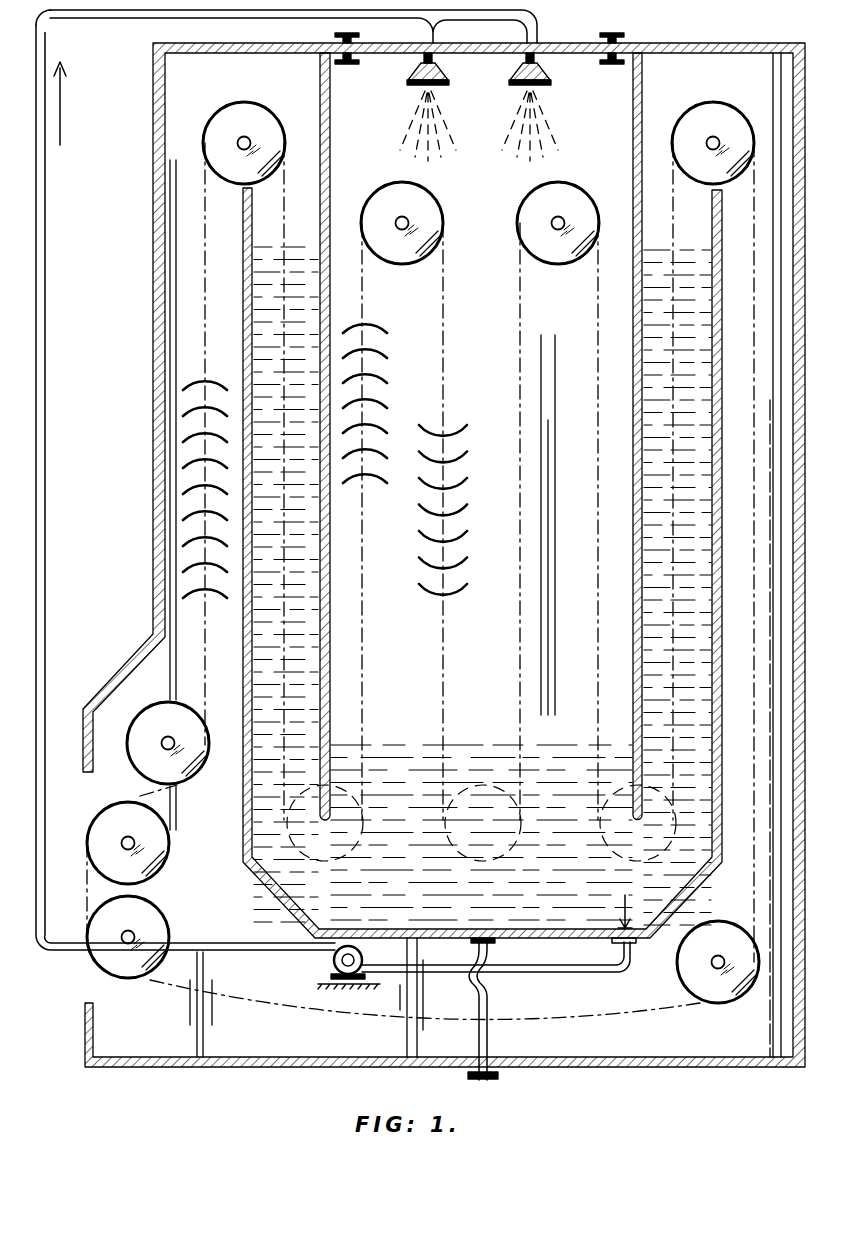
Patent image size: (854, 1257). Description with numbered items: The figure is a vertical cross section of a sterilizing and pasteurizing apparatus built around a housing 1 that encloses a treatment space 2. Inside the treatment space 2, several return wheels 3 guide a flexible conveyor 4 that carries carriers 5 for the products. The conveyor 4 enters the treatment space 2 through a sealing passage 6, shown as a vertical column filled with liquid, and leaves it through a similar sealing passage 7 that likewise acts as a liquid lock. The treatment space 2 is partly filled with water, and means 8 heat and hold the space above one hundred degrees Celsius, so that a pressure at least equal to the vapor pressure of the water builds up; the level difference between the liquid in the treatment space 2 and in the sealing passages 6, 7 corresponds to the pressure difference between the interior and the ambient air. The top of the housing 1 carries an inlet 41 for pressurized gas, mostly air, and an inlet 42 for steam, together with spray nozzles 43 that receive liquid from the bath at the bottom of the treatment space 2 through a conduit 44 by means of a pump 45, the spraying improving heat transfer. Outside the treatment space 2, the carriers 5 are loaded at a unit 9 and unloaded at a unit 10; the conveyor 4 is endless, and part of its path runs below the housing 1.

The housing 1 is at (708, 46).
The treatment space 2 is at (565, 72).
The return wheels 3 is at (256, 115).
The flexible conveyor 4 is at (444, 301).
The carriers 5 is at (389, 390).
The sealing passage 6 is at (258, 323).
The sealing passage 7 is at (698, 401).
The means for exerting and maintaining a temperature 8 is at (485, 1001).
The loading unit 9 is at (82, 803).
The unloading unit 10 is at (90, 967).
The inlet for pressurized gas 41 is at (622, 34).
The inlet for steam 42 is at (334, 34).
The spray nozzles 43 is at (410, 86).
The conduit 44 is at (47, 316).
The pump 45 is at (330, 966).